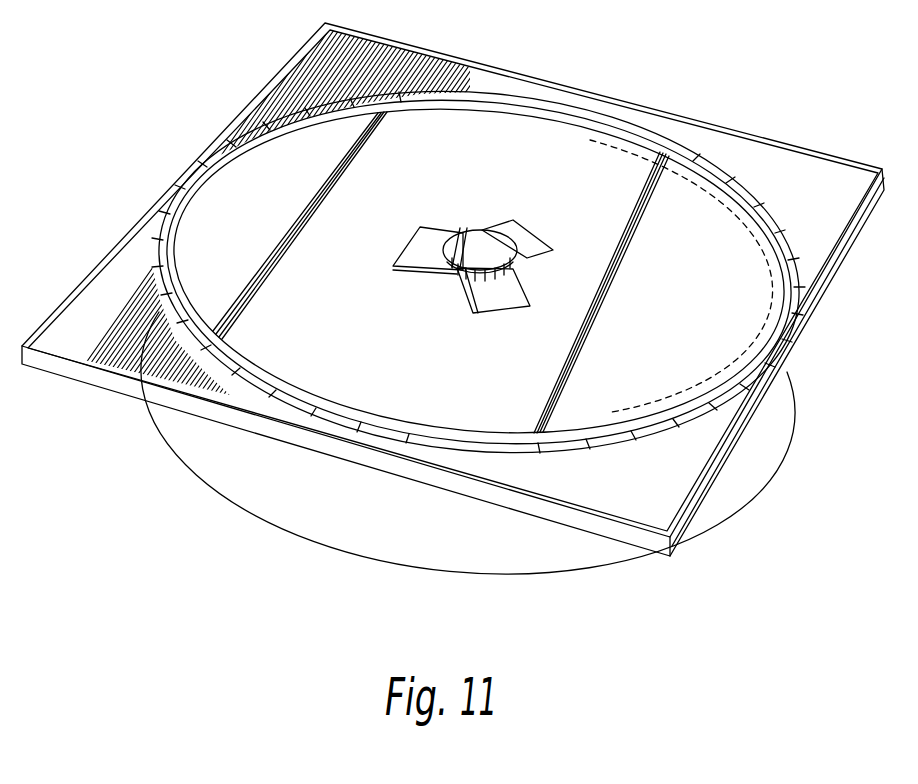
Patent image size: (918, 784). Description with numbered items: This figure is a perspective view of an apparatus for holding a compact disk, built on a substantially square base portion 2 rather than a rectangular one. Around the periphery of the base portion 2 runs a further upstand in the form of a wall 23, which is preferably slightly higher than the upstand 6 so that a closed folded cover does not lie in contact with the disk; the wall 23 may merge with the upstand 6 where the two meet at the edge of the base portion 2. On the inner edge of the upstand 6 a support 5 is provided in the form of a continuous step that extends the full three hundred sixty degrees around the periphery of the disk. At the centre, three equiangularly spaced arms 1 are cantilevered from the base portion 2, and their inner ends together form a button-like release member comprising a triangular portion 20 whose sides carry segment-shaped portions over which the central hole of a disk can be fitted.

The arm 1 is at (417, 245).
The base portion 2 is at (667, 496).
The support 5 is at (222, 162).
The upstand 6 is at (772, 212).
The triangular portion 20 is at (477, 242).
The wall 23 is at (138, 386).